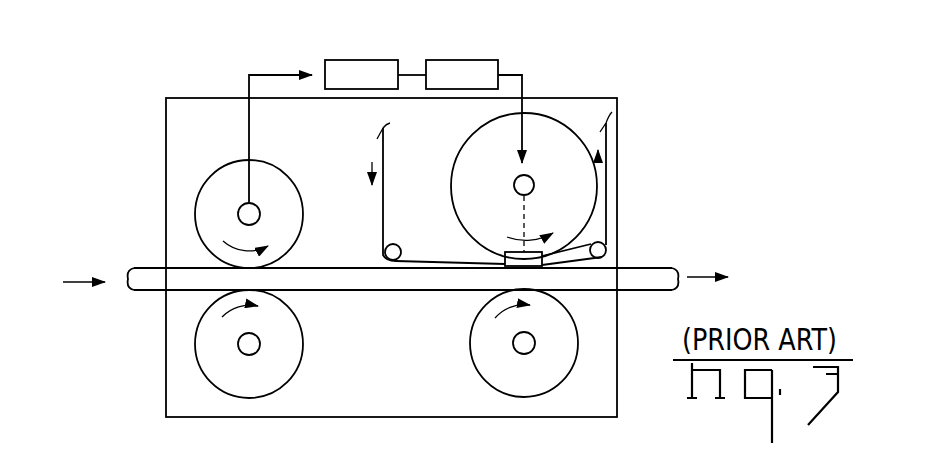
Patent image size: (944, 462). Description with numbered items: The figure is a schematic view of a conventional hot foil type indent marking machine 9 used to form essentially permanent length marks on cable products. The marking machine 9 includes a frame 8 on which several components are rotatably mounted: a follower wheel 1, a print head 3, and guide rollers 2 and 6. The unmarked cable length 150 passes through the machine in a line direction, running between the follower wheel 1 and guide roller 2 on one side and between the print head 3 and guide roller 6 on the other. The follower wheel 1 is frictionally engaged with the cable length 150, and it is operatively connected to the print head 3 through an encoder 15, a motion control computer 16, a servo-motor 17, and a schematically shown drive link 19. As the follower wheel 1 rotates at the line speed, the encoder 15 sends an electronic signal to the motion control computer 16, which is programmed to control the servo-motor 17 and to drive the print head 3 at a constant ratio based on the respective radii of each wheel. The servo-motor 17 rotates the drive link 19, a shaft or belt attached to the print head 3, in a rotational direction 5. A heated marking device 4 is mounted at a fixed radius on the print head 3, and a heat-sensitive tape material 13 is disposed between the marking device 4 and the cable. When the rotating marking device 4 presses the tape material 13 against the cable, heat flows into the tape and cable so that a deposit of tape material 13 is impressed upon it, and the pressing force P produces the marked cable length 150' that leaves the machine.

The follower wheel 1 is at (273, 185).
The guide roller 2 is at (298, 335).
The print head 3 is at (557, 145).
The print head (hot foil marking device) 4 is at (608, 241).
The rotational direction 5 is at (530, 230).
The guide roller 6 is at (565, 373).
The frame 8 is at (180, 158).
The hot foil type indent marking machine 9 is at (130, 110).
The heat-sensitive tape material 13 is at (385, 178).
The encoder 15 is at (250, 123).
The motion control computer 16 is at (370, 63).
The servo-motor 17 is at (448, 62).
The drive link 19 is at (527, 87).
The unmarked cable length 150 is at (363, 251).
The marked cable length 150' is at (664, 239).
The pressure P is at (522, 213).